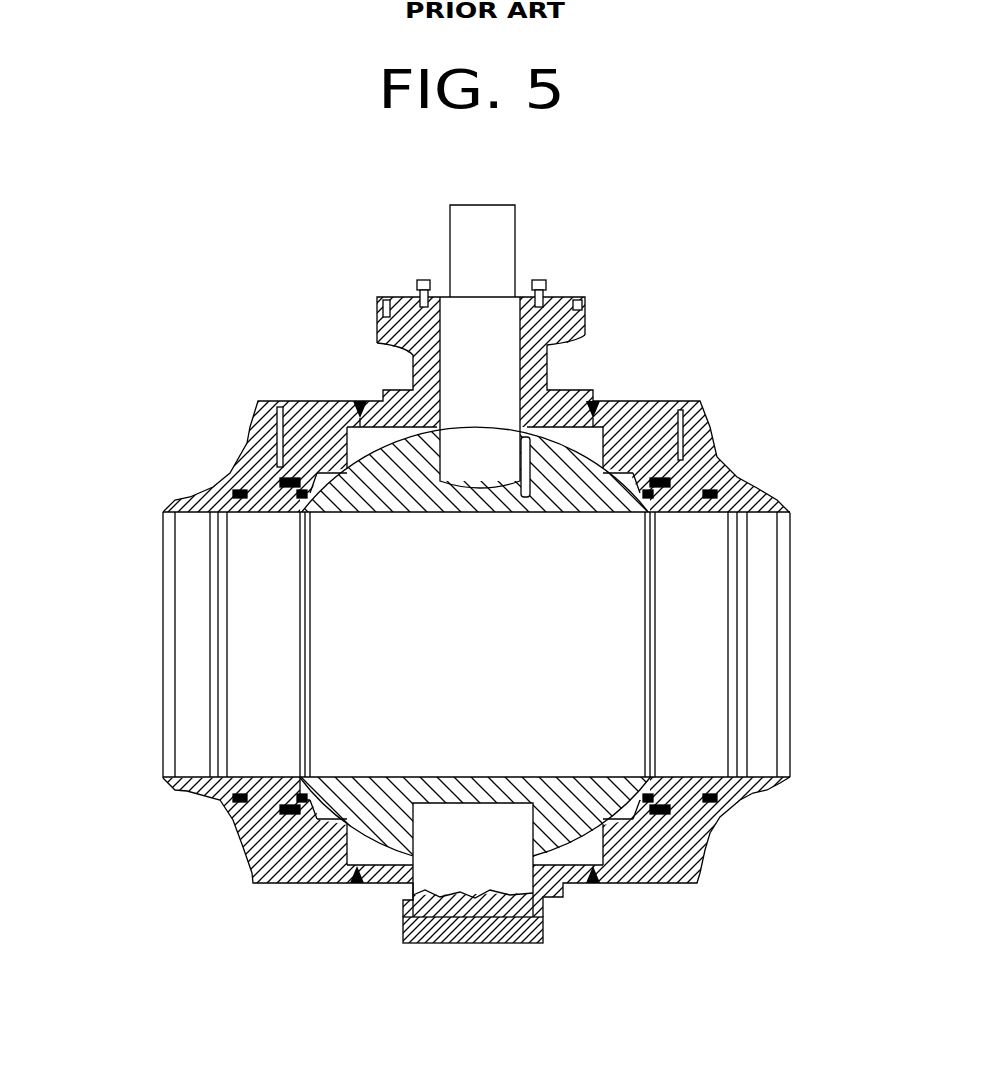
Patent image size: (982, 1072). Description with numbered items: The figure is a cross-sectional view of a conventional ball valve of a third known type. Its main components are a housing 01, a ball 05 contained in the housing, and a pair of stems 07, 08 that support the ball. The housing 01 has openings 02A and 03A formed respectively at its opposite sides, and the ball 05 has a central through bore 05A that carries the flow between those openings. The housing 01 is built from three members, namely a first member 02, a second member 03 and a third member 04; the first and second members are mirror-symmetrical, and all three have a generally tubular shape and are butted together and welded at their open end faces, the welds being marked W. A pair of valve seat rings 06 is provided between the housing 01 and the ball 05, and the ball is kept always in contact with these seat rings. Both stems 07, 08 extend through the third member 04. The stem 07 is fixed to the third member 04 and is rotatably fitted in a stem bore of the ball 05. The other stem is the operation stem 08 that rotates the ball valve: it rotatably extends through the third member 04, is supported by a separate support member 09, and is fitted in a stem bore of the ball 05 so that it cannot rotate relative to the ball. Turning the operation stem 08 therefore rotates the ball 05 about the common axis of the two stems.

The housing 01 is at (737, 440).
The first member 02 is at (267, 851).
The second member 03 is at (687, 845).
The opening 02A is at (155, 661).
The opening 03A is at (798, 660).
The third member 04 is at (550, 900).
The ball 05 is at (307, 827).
The central through bore 05A is at (505, 652).
The valve seat ring 06 is at (316, 466).
The stem 07 is at (462, 875).
The operation stem 08 is at (490, 237).
The support member 09 is at (573, 308).
The weld W is at (595, 403).